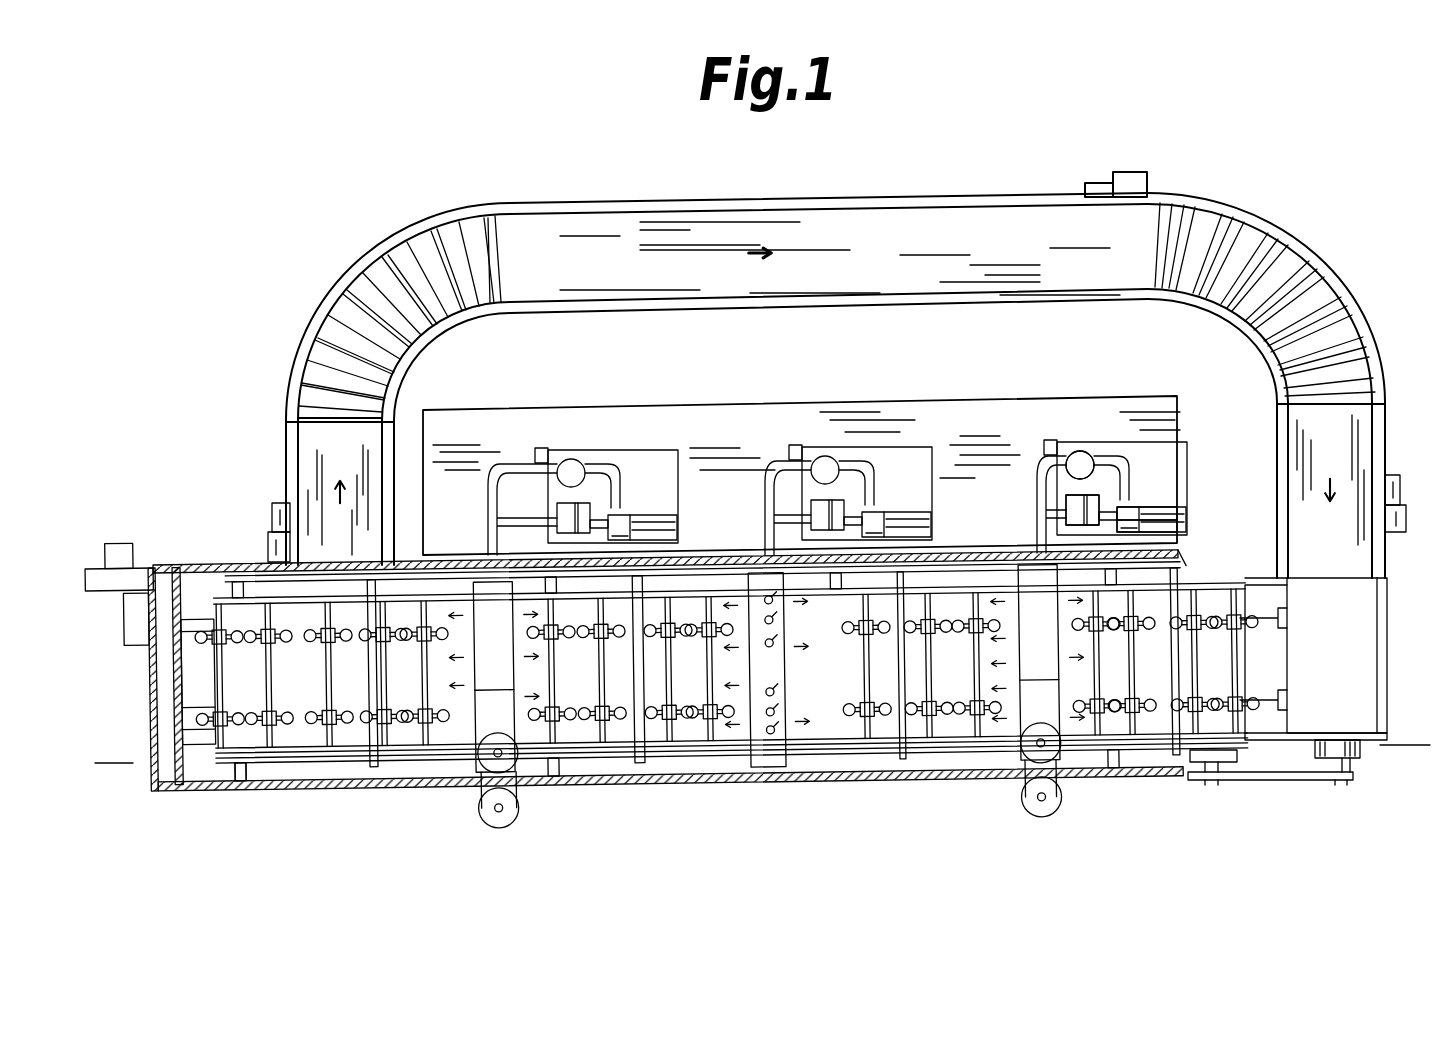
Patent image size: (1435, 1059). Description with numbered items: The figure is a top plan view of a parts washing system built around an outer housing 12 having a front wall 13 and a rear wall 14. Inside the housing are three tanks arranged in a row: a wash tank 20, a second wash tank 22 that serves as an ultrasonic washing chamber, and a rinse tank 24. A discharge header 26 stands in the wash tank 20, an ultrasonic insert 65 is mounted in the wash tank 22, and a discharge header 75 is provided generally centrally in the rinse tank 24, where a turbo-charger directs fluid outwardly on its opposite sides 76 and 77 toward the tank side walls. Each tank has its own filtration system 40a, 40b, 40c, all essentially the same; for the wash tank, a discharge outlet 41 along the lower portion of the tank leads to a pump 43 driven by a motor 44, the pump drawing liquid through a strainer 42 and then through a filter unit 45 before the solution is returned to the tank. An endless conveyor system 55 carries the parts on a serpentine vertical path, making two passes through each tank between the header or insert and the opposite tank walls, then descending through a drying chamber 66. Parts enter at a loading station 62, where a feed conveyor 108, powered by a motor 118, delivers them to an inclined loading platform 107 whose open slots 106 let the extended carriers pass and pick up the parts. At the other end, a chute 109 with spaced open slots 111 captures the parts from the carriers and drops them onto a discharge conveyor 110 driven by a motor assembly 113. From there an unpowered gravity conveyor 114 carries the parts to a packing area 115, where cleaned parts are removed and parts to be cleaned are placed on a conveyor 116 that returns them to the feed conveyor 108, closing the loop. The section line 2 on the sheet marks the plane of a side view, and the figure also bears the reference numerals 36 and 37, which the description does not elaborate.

The section line 2- 2 is at (118, 766).
The outer housing 12 is at (642, 788).
The front wall 13 is at (866, 772).
The rear wall 14 is at (732, 549).
The wash tank 20 is at (1003, 738).
The wash tank 22 is at (708, 762).
The rinse tank 24 is at (462, 740).
The discharge header 26 is at (1024, 654).
The flow direction arrows 36 is at (987, 654).
The drive belt and pulley 37 is at (1061, 730).
The filtration system 40a is at (1110, 438).
The filtration system 40b is at (857, 442).
The filtration system 40c is at (614, 447).
The discharge outlet 41 is at (1040, 518).
The strainer 42 is at (1063, 500).
The pump 43 is at (1128, 513).
The motor 44 is at (1170, 520).
The filter unit 45 is at (1065, 460).
The endless conveyor system 55 is at (1168, 760).
The loading station 62 is at (1350, 600).
The ultrasonic insert 65 is at (769, 764).
The drying chamber 66 is at (258, 770).
The discharge header 75 is at (487, 580).
The side of discharge header 76 is at (462, 672).
The side of discharge header 77 is at (515, 692).
The open slots 106 is at (1278, 690).
The loading platform 107 is at (1309, 708).
The feed conveyor 108 is at (1300, 468).
The chute 109 is at (287, 742).
The discharge conveyor 110 is at (327, 444).
The open slots 111 is at (195, 620).
The motor assembly 113 is at (266, 535).
The gravity conveyor 114 is at (370, 258).
The packing area 115 is at (822, 228).
The conveyor 116 is at (1232, 228).
The motor 118 is at (1388, 508).